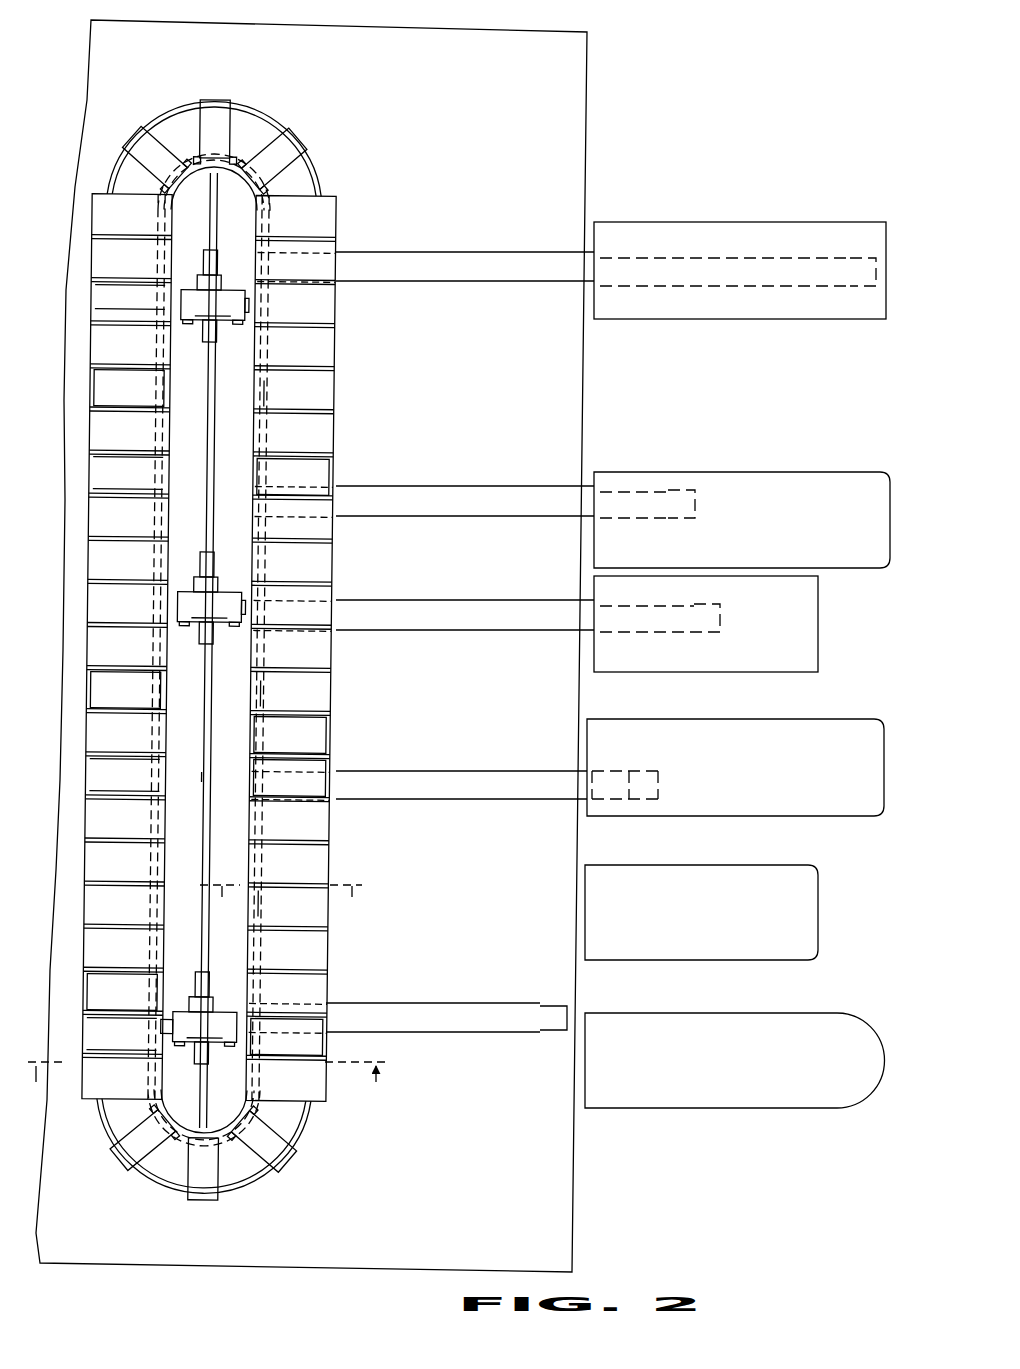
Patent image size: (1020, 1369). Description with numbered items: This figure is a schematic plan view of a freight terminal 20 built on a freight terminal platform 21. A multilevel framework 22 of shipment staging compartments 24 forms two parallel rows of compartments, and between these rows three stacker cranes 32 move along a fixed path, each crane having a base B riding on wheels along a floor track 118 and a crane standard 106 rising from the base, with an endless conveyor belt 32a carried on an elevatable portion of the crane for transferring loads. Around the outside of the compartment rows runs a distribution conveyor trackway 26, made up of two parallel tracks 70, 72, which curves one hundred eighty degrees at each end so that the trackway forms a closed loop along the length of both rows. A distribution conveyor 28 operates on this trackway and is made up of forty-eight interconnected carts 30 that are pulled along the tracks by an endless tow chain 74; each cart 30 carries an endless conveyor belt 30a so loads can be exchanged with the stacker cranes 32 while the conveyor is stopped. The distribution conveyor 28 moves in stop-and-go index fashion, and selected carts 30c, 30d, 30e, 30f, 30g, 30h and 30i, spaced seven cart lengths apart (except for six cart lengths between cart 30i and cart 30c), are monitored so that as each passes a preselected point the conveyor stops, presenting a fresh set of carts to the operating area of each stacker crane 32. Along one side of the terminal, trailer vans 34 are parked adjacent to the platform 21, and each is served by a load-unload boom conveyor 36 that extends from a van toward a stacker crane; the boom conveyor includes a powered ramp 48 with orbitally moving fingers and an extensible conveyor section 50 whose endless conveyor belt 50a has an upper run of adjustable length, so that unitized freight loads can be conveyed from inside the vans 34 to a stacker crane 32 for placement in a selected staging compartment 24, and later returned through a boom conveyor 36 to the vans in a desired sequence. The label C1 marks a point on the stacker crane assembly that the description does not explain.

The freight terminal 20 is at (618, 176).
The freight terminal platform 21 is at (453, 684).
The multilevel framework 22 is at (338, 733).
The staging compartments 24 is at (335, 382).
The distribution conveyor trackway 26 is at (316, 150).
The distribution conveyor 28 is at (302, 1150).
The carts 30 is at (284, 116).
The endless conveyor belt 30a is at (210, 108).
The selected cart 30c is at (290, 1078).
The selected cart 30d is at (327, 772).
The selected cart 30e is at (334, 462).
The selected cart 30f is at (292, 165).
The selected cart 30g is at (95, 402).
The selected cart 30h is at (92, 683).
The selected cart 30i is at (90, 987).
The stacker crane 32 is at (200, 334).
The endless conveyor belt 32a is at (209, 668).
The trailer vans 34 is at (724, 311).
The load-unload boom conveyor 36 is at (601, 637).
The powered ramp 48 is at (862, 286).
The extensible conveyor section 50 is at (490, 283).
The endless conveyor belt 50a is at (399, 486).
The track 70 is at (238, 160).
The track 72 is at (322, 198).
The endless tow chain 74 is at (165, 232).
The crane standard 106 is at (204, 280).
The floor track 118 is at (208, 777).
The base B is at (219, 568).
The point C1 is at (252, 306).